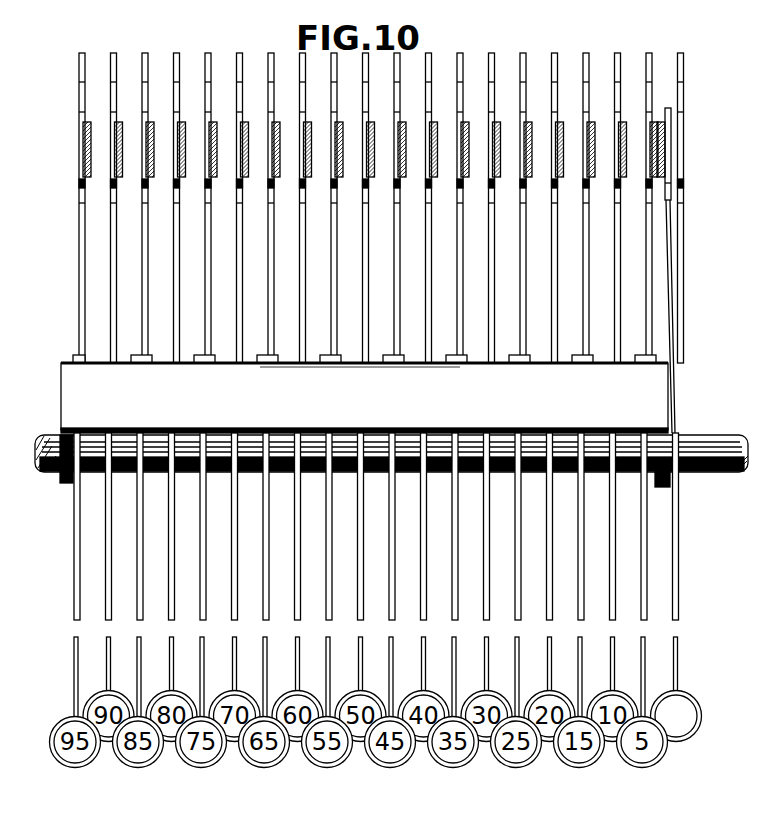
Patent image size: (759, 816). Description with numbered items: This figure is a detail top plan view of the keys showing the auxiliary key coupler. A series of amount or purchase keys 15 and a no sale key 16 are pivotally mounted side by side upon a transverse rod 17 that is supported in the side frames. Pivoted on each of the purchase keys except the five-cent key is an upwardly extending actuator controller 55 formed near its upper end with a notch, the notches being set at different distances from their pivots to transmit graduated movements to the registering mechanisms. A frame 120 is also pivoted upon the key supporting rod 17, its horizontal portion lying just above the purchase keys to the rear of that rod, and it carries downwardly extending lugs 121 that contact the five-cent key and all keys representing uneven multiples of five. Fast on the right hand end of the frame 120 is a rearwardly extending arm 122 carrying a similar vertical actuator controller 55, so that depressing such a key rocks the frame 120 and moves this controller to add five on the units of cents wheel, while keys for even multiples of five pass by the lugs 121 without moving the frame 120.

The amount keys 15 is at (237, 708).
The no sale key 16 is at (692, 700).
The transverse rod 17 is at (733, 412).
The actuator controller 55 is at (663, 158).
The frame 120 is at (666, 372).
The lugs 121 is at (205, 364).
The arm 122 is at (671, 265).